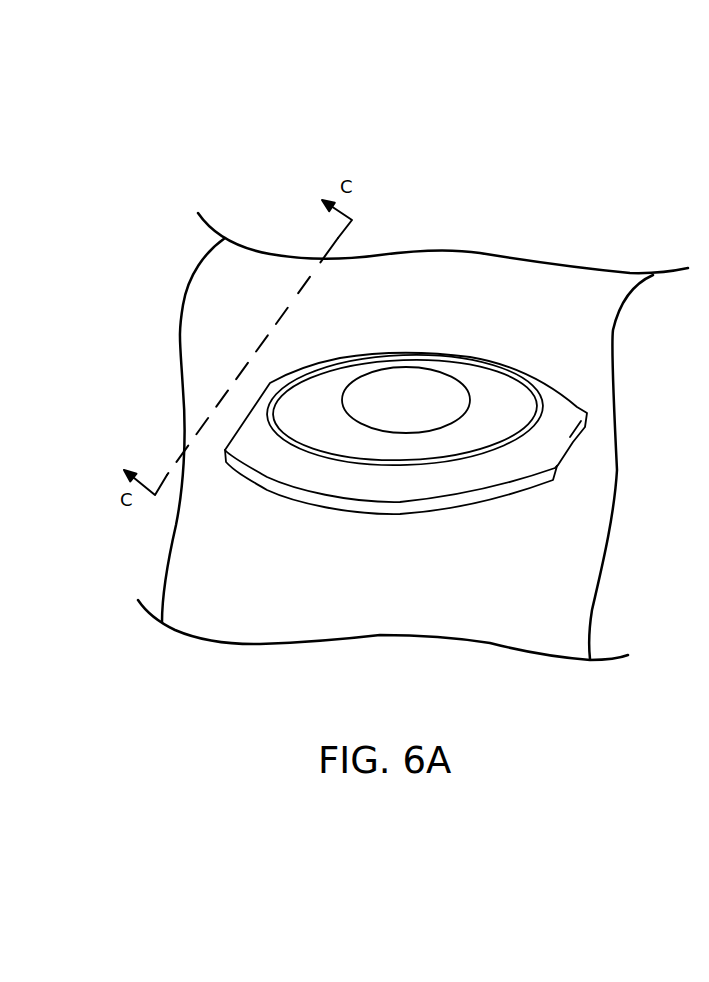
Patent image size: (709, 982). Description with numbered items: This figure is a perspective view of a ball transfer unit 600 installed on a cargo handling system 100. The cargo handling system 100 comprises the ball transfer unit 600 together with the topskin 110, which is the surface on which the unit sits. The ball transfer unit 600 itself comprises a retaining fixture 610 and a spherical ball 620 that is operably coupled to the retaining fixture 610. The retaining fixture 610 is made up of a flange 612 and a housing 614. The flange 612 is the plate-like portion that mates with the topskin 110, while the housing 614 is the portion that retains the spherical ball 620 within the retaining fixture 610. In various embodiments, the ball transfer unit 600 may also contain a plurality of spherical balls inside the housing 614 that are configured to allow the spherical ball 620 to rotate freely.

The cargo handling system 100 is at (313, 158).
The topskin 110 is at (315, 579).
The ball transfer unit 600 is at (415, 378).
The retaining fixture 610 is at (444, 510).
The flange 612 is at (562, 427).
The housing 614 is at (498, 397).
The spherical ball 620 is at (427, 380).